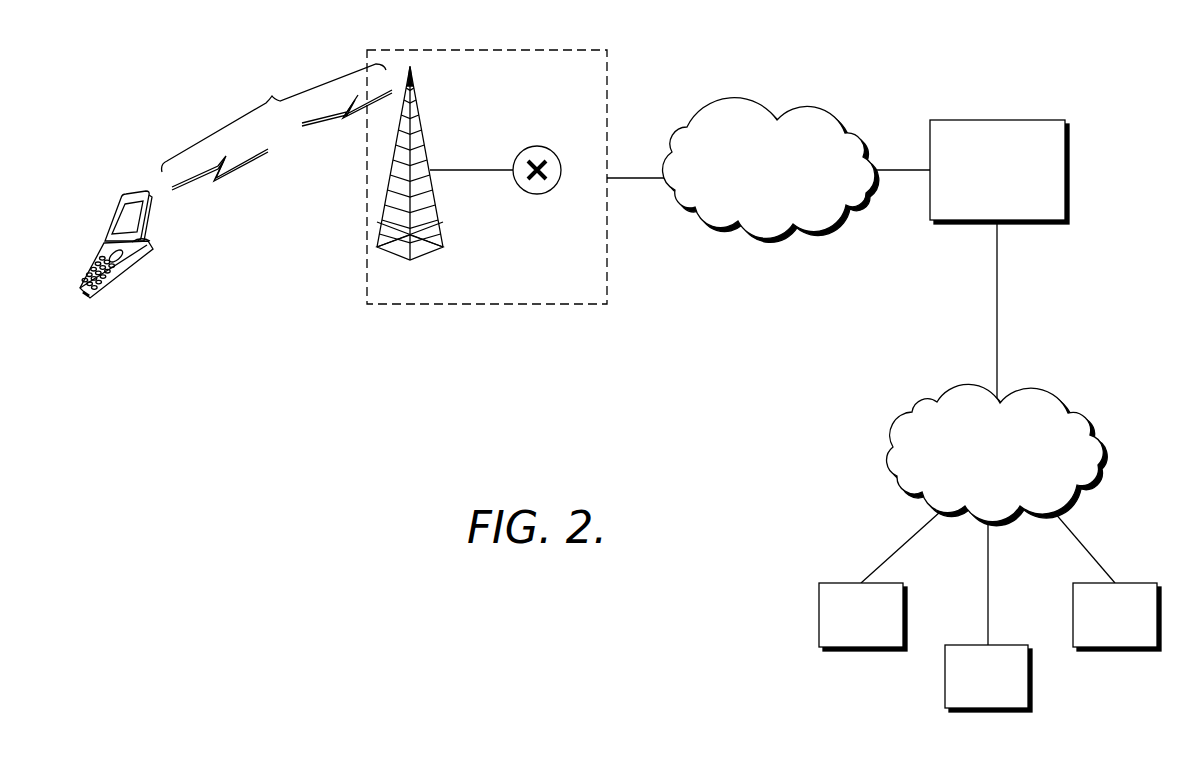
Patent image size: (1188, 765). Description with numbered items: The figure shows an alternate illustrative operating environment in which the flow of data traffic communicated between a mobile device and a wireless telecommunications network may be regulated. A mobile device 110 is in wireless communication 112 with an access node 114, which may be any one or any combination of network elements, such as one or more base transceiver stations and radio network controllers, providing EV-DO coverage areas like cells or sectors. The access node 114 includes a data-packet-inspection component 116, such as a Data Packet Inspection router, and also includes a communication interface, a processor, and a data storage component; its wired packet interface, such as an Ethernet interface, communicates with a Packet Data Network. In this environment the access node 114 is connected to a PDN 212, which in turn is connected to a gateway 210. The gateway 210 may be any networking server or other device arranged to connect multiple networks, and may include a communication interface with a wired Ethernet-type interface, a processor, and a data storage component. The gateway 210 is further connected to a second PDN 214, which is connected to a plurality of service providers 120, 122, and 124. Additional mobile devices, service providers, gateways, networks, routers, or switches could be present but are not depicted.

The mobile device 110 is at (128, 268).
The communication 112 is at (277, 127).
The access node 114 is at (488, 50).
The data-packet-inspection component 116 is at (540, 146).
The service provider 120 is at (861, 651).
The service provider 122 is at (988, 712).
The service provider 124 is at (1115, 651).
The gateway 210 is at (998, 120).
The PDN 212 is at (807, 110).
The second PDN 214 is at (1100, 460).